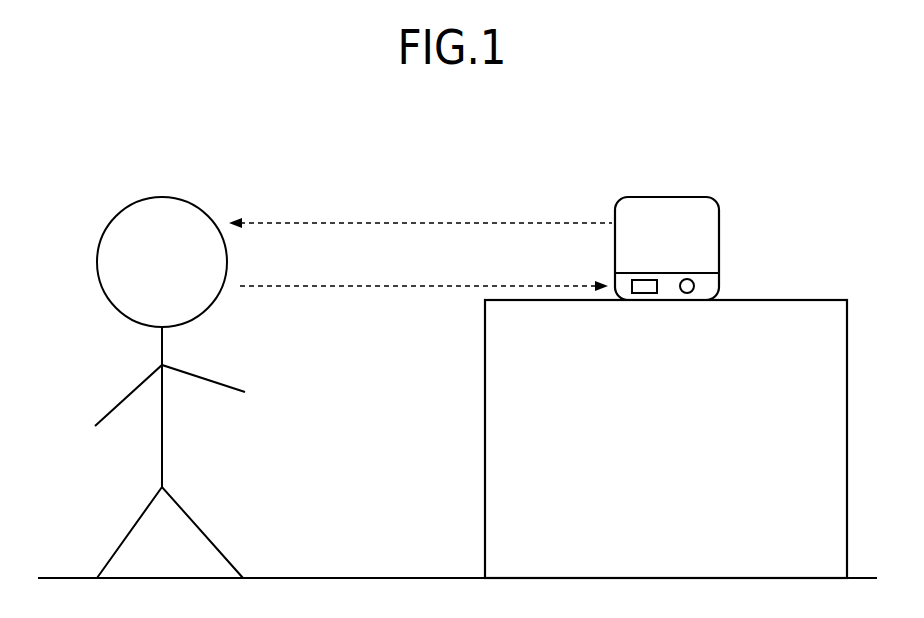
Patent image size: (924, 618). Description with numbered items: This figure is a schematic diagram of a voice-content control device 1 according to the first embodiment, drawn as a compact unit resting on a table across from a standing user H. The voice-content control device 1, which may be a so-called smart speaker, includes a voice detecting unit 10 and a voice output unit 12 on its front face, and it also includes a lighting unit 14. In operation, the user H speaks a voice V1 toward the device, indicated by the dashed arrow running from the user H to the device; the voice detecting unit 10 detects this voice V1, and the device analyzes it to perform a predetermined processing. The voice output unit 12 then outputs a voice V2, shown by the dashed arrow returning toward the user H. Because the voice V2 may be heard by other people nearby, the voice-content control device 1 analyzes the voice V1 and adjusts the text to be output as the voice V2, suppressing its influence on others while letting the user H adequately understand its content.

The voice-content control device 1 is at (698, 216).
The voice detecting unit 10 is at (643, 279).
The voice output unit 12 is at (720, 211).
The lighting unit 14 is at (686, 279).
The user H is at (204, 186).
The voice V1 is at (424, 297).
The voice V2 is at (420, 214).